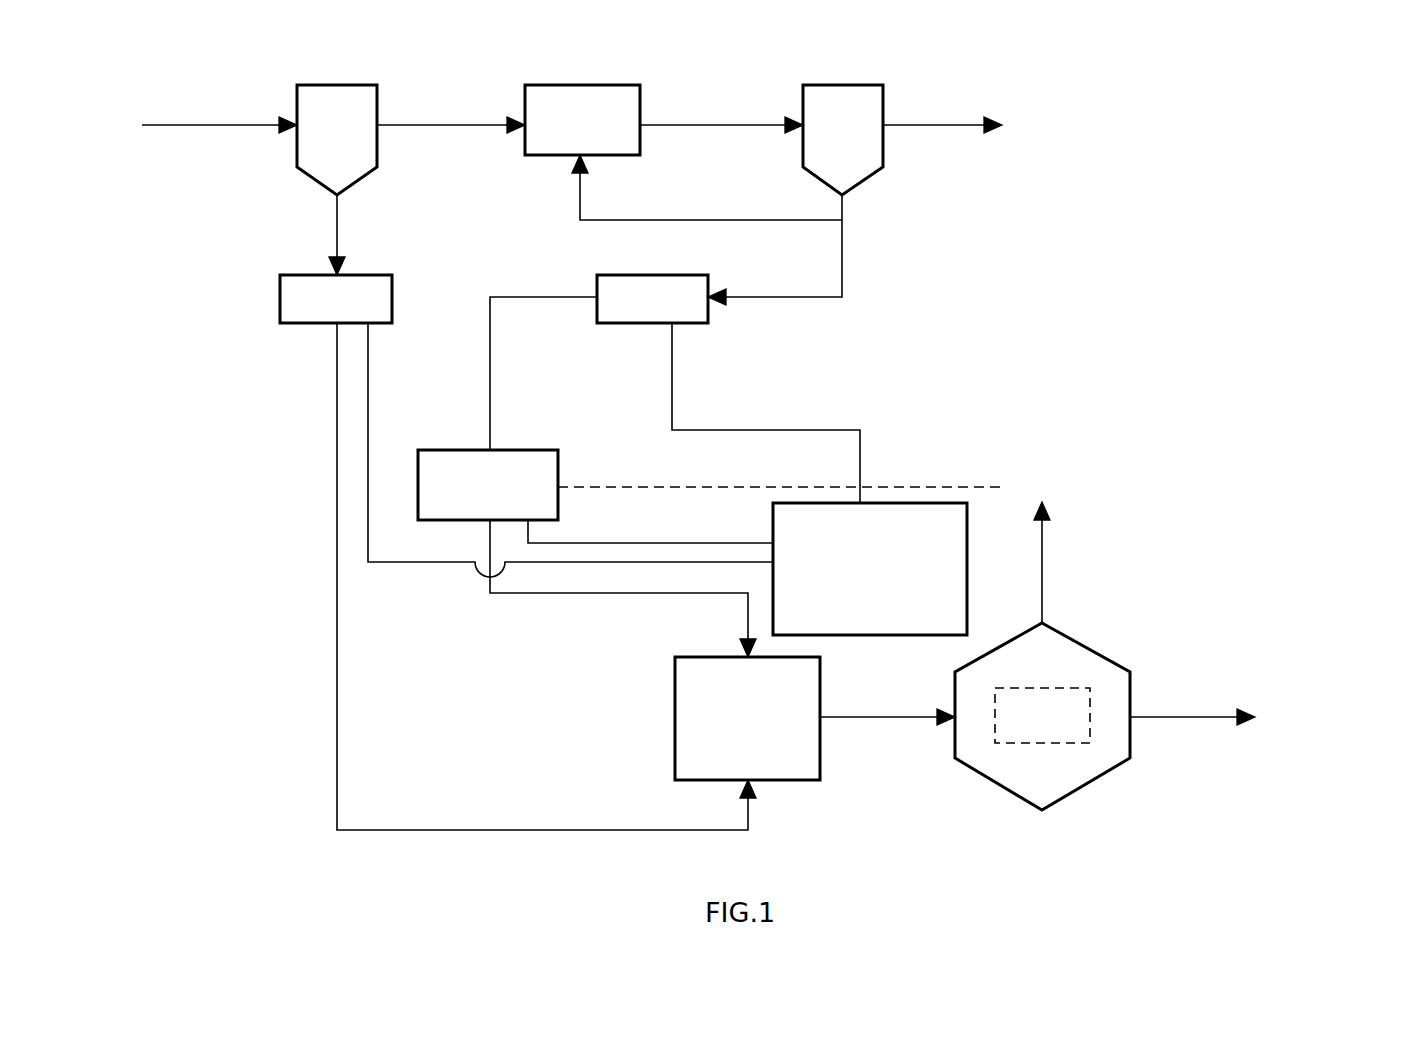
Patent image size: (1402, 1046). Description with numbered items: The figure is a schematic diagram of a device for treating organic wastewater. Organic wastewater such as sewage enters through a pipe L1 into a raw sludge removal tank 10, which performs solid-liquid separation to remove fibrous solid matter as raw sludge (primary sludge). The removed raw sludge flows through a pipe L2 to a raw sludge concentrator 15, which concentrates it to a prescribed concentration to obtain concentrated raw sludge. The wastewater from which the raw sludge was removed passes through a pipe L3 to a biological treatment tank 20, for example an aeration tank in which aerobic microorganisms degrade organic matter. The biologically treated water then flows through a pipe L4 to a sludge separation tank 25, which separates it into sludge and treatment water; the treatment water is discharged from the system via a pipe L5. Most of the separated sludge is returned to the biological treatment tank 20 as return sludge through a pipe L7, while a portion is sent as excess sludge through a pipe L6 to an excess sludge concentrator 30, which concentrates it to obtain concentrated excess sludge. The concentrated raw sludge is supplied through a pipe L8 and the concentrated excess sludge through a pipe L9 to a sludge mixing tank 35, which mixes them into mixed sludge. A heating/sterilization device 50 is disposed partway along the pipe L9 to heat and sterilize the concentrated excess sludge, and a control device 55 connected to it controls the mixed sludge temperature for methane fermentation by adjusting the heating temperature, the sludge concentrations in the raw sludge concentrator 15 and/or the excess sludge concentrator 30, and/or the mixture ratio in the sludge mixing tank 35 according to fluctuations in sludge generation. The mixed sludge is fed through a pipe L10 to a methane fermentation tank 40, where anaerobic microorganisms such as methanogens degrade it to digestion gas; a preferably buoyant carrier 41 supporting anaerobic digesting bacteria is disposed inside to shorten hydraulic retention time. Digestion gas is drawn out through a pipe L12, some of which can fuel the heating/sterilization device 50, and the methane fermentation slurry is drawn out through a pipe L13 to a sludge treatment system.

The raw sludge removal tank 10 is at (336, 85).
The raw sludge concentrator 15 is at (280, 305).
The biological treatment tank 20 is at (585, 85).
The sludge separation tank 25 is at (843, 85).
The excess sludge concentrator 30 is at (685, 325).
The sludge mixing tank 35 is at (675, 731).
The methane fermentation tank 40 is at (1083, 647).
The carrier 41 is at (1058, 744).
The heating/sterilization device 50 is at (558, 462).
The control device 55 is at (967, 557).
The pipe L1 is at (151, 127).
The pipe L2 is at (337, 226).
The pipe L3 is at (437, 127).
The pipe L4 is at (715, 127).
The pipe L5 is at (930, 127).
The pipe L6 is at (808, 300).
The pipe L7 is at (580, 198).
The pipe L8 is at (337, 532).
The pipe L9 is at (490, 397).
The pipe L10 is at (883, 716).
The pipe L12 is at (1042, 548).
The pipe L13 is at (1180, 718).